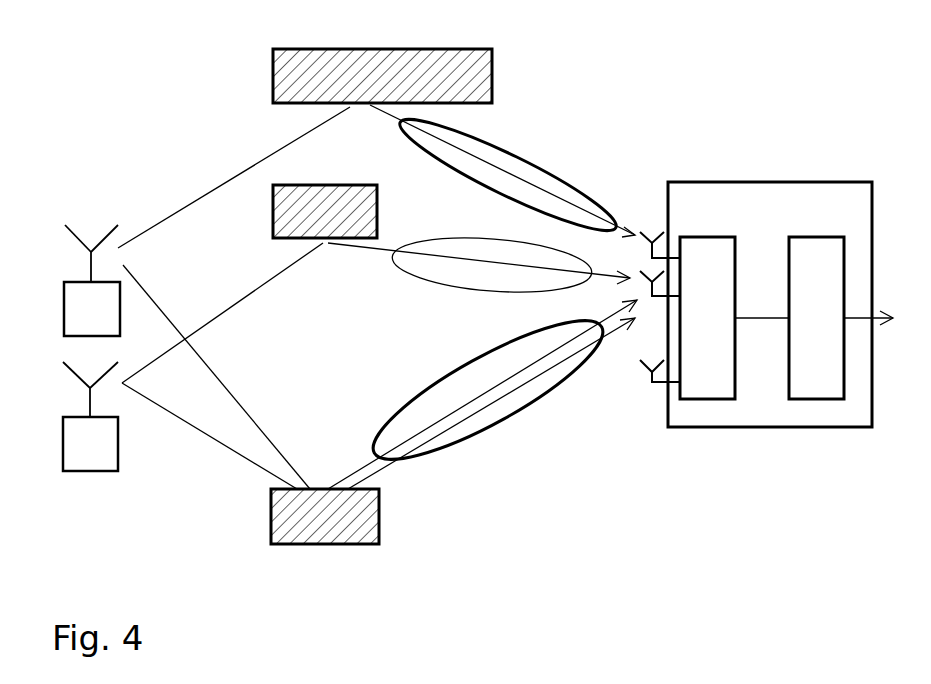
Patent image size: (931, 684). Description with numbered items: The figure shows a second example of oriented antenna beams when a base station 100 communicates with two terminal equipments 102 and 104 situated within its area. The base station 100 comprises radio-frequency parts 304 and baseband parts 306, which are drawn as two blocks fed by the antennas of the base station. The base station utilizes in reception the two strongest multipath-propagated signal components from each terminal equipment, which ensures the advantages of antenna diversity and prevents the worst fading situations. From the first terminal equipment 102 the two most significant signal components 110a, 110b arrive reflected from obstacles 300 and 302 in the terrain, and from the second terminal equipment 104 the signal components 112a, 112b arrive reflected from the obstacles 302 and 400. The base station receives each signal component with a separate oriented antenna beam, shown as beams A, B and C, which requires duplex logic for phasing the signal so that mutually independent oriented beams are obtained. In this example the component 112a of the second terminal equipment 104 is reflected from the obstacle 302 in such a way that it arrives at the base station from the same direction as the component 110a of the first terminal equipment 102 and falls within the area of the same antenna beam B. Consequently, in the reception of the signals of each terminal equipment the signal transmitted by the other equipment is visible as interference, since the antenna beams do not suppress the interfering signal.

The base station 100 is at (766, 325).
The terminal equipment 102 is at (64, 290).
The terminal equipment 104 is at (63, 427).
The signal component 110a is at (153, 297).
The signal component 110b is at (192, 207).
The signal component 112a is at (195, 427).
The signal component 112b is at (277, 280).
The obstacle 300 is at (383, 49).
The obstacle 302 is at (295, 544).
The obstacle 400 is at (300, 185).
The radio-frequency parts 304 is at (690, 237).
The baseband parts 306 is at (800, 237).
The oriented antenna beam A is at (548, 167).
The oriented antenna beam B is at (490, 422).
The oriented antenna beam C is at (423, 280).